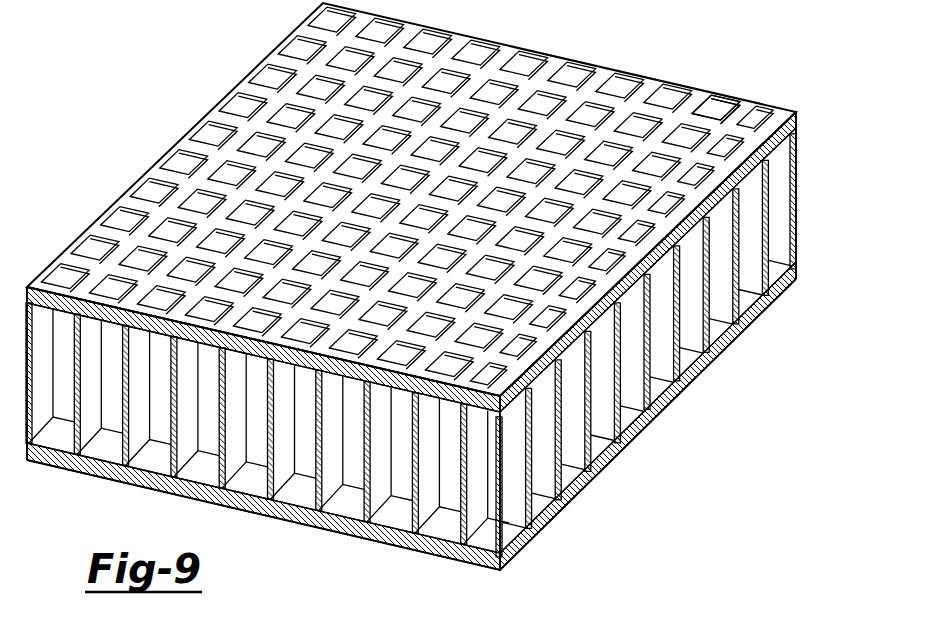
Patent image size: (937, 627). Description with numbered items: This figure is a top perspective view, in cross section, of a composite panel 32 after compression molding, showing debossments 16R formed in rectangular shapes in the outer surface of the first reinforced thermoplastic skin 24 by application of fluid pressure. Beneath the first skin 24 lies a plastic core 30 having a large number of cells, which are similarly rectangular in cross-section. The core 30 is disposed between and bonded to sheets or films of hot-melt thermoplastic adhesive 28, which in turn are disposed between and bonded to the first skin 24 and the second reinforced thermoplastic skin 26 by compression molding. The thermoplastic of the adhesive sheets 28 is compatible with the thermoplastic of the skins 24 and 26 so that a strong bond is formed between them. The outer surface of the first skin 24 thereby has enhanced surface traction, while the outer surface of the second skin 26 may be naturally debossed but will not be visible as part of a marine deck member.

The composite panel 32 is at (610, 44).
The debossments 16R is at (716, 97).
The first reinforced thermoplastic skin 24 is at (794, 110).
The hot-melt adhesive sheets 28 is at (798, 128).
The plastic core 30 is at (776, 207).
The second reinforced thermoplastic skin 26 is at (802, 276).